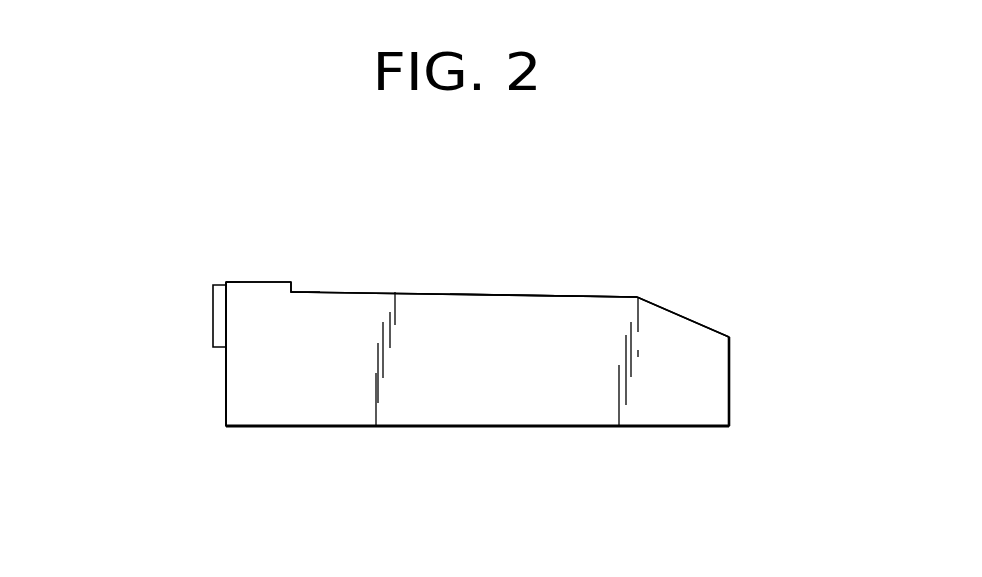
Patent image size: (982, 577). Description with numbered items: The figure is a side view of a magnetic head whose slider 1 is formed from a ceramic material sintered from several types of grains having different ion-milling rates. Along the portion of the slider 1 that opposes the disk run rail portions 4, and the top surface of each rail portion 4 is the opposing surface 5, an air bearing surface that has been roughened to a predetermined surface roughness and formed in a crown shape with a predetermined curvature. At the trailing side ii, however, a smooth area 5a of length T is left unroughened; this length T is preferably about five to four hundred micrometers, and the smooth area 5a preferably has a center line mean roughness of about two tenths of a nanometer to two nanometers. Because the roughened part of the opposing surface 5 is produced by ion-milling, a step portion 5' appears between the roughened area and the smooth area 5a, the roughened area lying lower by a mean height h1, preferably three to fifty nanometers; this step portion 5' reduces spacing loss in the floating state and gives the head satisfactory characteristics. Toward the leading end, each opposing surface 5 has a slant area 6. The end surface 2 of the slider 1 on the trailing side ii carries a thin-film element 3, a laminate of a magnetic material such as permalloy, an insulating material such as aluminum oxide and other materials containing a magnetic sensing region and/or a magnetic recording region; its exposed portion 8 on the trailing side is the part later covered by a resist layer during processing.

The slider 1 is at (570, 393).
The end surface 2 is at (225, 407).
The thin-film element 3 is at (213, 310).
The rail portion 4 is at (466, 281).
The opposing surface 5 is at (543, 261).
The smooth area 5a is at (247, 277).
The step portion 5' is at (318, 246).
The slant area 6 is at (683, 316).
The exposed portion 8 is at (215, 283).
The length of smooth area T is at (292, 287).
The mean height of step portion h1 is at (291, 282).
The trailing side ii is at (224, 368).